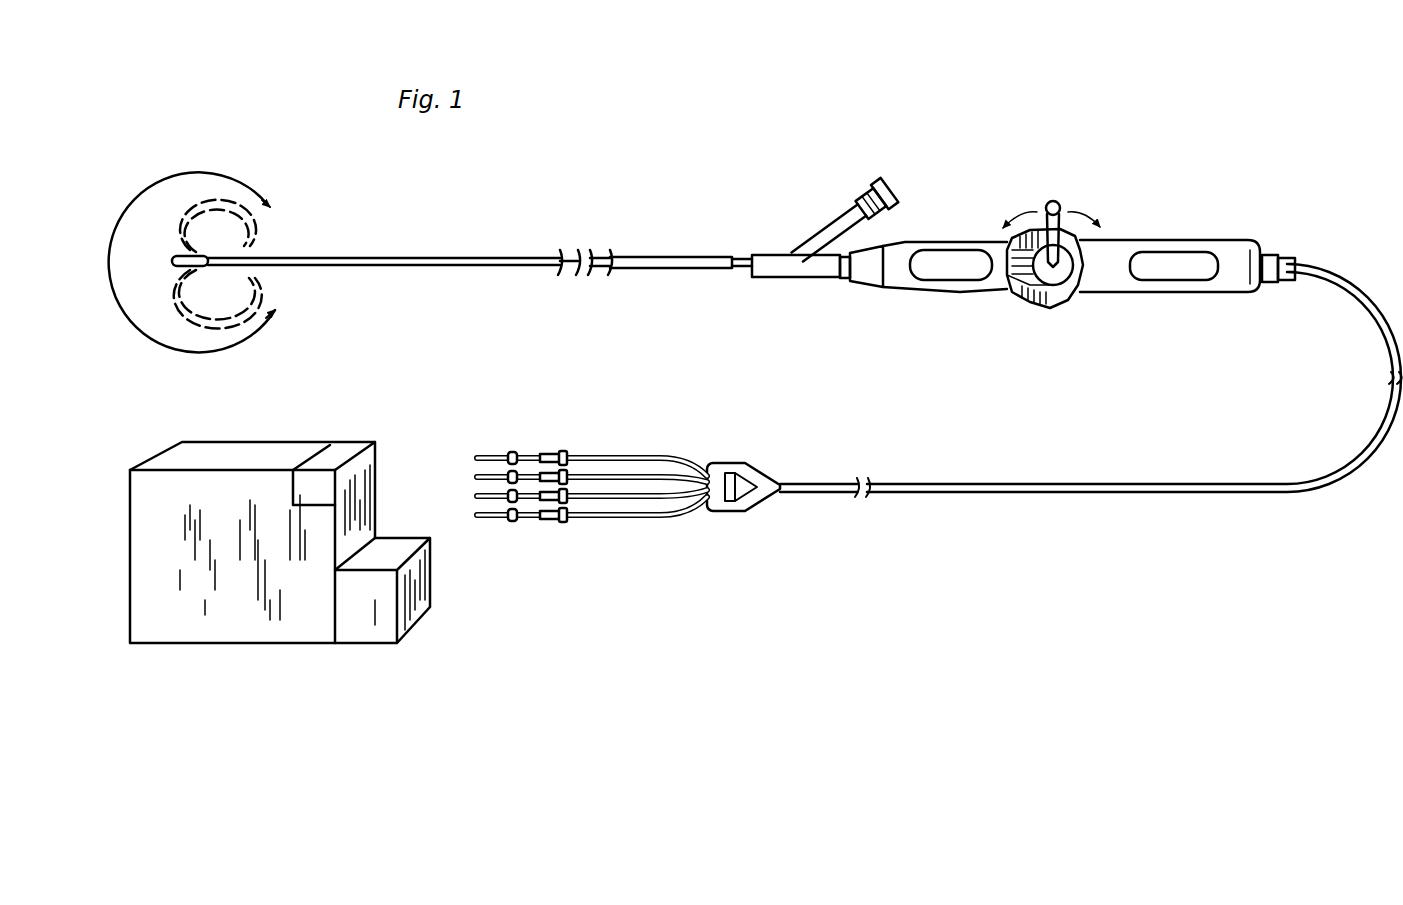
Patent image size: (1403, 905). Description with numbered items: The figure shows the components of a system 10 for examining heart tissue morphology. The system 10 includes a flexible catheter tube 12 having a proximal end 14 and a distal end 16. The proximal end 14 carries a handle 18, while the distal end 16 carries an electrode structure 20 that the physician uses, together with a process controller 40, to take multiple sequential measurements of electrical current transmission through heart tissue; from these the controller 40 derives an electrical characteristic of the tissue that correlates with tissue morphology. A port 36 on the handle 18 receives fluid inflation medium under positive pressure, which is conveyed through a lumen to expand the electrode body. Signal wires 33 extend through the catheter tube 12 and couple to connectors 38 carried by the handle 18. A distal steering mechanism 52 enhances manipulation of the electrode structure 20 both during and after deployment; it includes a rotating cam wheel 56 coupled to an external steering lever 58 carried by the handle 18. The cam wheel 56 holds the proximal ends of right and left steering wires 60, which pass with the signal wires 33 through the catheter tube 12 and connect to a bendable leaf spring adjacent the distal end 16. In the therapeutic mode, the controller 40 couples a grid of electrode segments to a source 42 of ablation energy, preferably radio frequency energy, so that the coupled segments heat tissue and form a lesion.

The system 10 is at (949, 148).
The catheter tube 12 is at (663, 260).
The proximal end 14 is at (722, 257).
The distal end 16 is at (222, 257).
The electrode structure 20 is at (157, 243).
The wires 33 is at (570, 270).
The port 36 is at (887, 186).
The connectors 38 is at (742, 478).
The process controller 40 is at (377, 577).
The source of ablation energy 42 is at (243, 617).
The distal steering mechanism 52 is at (1095, 210).
The rotating cam wheel 56 is at (1055, 272).
The external steering lever 58 is at (1055, 202).
The steering wires 60 is at (1023, 293).
The handle 18 is at (912, 245).